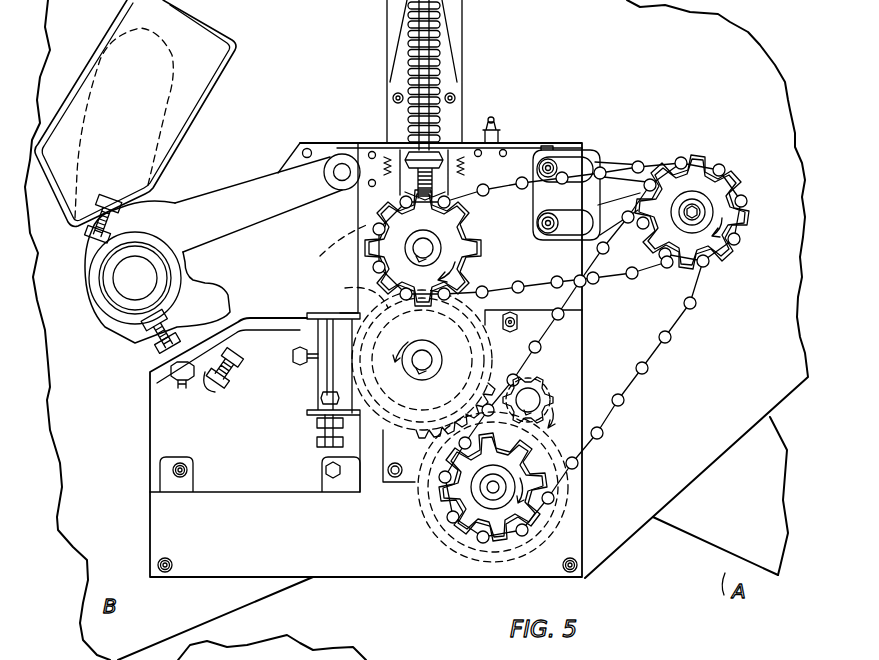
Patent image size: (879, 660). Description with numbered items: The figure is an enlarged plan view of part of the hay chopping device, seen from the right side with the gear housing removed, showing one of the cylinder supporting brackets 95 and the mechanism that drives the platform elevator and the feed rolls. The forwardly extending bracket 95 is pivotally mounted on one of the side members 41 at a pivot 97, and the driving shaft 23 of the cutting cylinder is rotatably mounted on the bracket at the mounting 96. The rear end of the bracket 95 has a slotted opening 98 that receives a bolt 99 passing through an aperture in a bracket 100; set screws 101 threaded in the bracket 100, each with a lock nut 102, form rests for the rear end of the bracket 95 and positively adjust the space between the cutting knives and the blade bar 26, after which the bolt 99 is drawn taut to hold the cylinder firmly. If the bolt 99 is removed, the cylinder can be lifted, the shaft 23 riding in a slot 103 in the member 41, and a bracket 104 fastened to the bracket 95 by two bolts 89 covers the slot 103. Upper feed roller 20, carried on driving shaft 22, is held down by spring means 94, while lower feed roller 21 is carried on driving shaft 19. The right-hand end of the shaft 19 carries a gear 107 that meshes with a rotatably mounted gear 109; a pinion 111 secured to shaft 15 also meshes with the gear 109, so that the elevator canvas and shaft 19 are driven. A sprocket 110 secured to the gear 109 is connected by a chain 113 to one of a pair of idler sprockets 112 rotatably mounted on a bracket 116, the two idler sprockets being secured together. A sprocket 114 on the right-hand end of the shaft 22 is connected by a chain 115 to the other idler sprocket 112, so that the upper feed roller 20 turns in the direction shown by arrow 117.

The shaft 15 is at (528, 392).
The driving shaft 19 is at (439, 372).
The upper feed roller 20 is at (342, 247).
The lower feed roller 21 is at (355, 297).
The driving shaft 22 is at (413, 240).
The driving shaft 23 is at (135, 278).
The blade bar 26 is at (323, 370).
The members 41 is at (366, 332).
The bolts 89 is at (97, 197).
The spring holding means 94 is at (467, 97).
The cylinder supporting bracket 95 is at (235, 197).
The shaft mounting 96 is at (113, 302).
The pivot 97 is at (336, 168).
The slotted openings 98 is at (127, 223).
The bolts 99 is at (187, 387).
The bracket 100 is at (255, 488).
The set screws 101 is at (230, 365).
The lock nut 102 is at (210, 373).
The slots 103 is at (182, 67).
The bracket 104 is at (200, 123).
The gear 107 is at (422, 360).
The gear 109 is at (435, 512).
The sprocket 110 is at (433, 497).
The pinion 111 is at (563, 398).
The idler sprockets 112 is at (745, 178).
The chain 113 is at (646, 384).
The sprocket 114 is at (457, 227).
The chain 115 is at (637, 167).
The bracket 116 is at (585, 193).
The arrow 117 is at (448, 250).